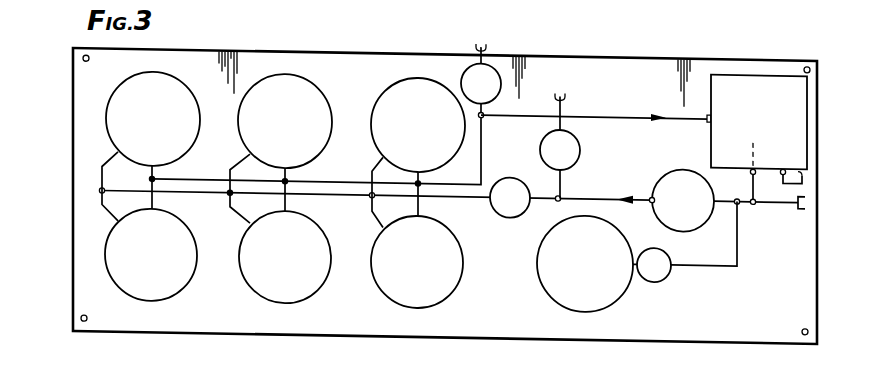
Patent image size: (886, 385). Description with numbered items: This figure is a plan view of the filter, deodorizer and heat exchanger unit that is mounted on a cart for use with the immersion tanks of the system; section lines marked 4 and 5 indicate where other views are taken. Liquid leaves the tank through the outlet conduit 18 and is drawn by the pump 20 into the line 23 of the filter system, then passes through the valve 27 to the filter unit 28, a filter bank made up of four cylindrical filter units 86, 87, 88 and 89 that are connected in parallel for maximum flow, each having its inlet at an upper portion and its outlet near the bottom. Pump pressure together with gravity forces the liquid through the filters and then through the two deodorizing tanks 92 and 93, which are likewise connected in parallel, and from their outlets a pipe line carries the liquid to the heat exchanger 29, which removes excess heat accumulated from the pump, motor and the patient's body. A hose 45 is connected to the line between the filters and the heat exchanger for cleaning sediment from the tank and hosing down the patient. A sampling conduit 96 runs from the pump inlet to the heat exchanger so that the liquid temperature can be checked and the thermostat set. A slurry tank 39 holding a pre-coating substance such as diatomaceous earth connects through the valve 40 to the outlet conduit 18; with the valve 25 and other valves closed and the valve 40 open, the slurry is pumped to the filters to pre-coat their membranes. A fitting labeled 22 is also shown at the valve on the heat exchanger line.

The filter unit 28 is at (92, 103).
The cylindrical filter unit 86 is at (191, 87).
The cylindrical filter unit 87 is at (321, 87).
The cylindrical filter unit 88 is at (318, 285).
The cylindrical filter unit 89 is at (183, 287).
The deodorizing tank 92 is at (443, 48).
The deodorizing tank 93 is at (449, 289).
The hose 45 is at (487, 42).
The valve actuator 22 is at (566, 92).
The valve 25 is at (581, 143).
The valve 27 is at (503, 210).
The heat exchanger 29 is at (736, 63).
The pump 20 is at (671, 164).
The sampling conduit 96 is at (750, 170).
The line 23 is at (318, 191).
The outlet conduit 18 is at (783, 192).
The slurry tank 39 is at (552, 290).
The valve 40 is at (660, 270).
The section line 5- 5 is at (95, 254).
The section line 4- 4 is at (58, 352).